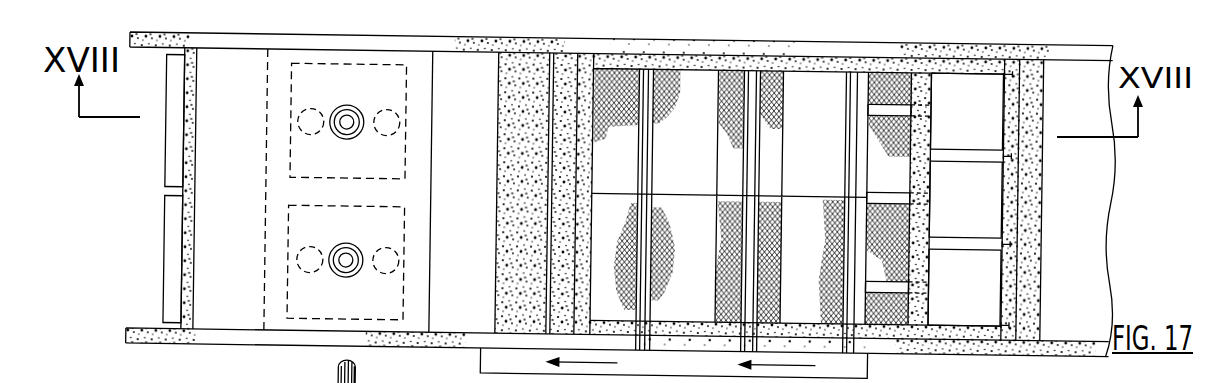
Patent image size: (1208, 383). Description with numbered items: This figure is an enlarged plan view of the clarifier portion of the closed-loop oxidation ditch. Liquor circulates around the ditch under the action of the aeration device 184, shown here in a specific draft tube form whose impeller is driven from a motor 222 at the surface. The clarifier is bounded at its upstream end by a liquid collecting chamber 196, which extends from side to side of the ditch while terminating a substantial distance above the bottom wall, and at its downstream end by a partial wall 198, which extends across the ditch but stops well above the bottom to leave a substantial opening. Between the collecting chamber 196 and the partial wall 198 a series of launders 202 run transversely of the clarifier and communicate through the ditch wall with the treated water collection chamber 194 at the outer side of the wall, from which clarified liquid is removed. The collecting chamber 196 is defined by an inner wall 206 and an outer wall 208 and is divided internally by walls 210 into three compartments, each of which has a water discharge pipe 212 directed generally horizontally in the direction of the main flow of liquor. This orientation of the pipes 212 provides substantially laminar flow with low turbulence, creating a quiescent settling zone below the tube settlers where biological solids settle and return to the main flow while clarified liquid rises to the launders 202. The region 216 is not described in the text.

The aeration device 184 is at (222, 216).
The collection chamber 194 is at (487, 357).
The liquid collecting chamber 196 is at (981, 324).
The partial wall 198 is at (582, 260).
The launders 202 is at (847, 310).
The inner wall 206 is at (913, 306).
The outer wall 208 is at (1010, 201).
The walls 210 is at (972, 150).
The water discharge pipe 212 is at (867, 285).
The outlet chamber 216 is at (1032, 120).
The motor 222 is at (338, 368).